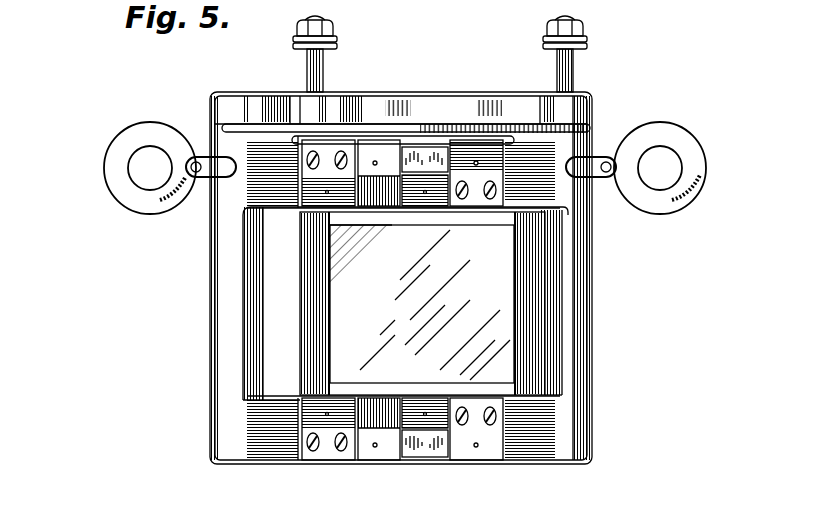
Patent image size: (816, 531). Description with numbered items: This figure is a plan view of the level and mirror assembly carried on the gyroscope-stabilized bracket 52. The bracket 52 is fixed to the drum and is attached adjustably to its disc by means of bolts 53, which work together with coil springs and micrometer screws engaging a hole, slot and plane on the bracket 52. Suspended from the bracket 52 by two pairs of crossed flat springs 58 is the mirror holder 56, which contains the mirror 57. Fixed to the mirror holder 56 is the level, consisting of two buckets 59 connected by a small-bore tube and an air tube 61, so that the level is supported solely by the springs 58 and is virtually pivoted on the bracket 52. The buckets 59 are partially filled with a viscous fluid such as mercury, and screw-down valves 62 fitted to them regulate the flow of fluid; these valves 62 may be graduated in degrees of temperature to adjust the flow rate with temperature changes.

The bracket 52 is at (573, 290).
The bolts 53 is at (310, 74).
The mirror holder 56 is at (312, 255).
The mirror 57 is at (345, 291).
The crossed flat springs 58 is at (382, 165).
The buckets 59 is at (104, 165).
The air tube 61 is at (212, 160).
The screw-down valves 62 is at (146, 160).